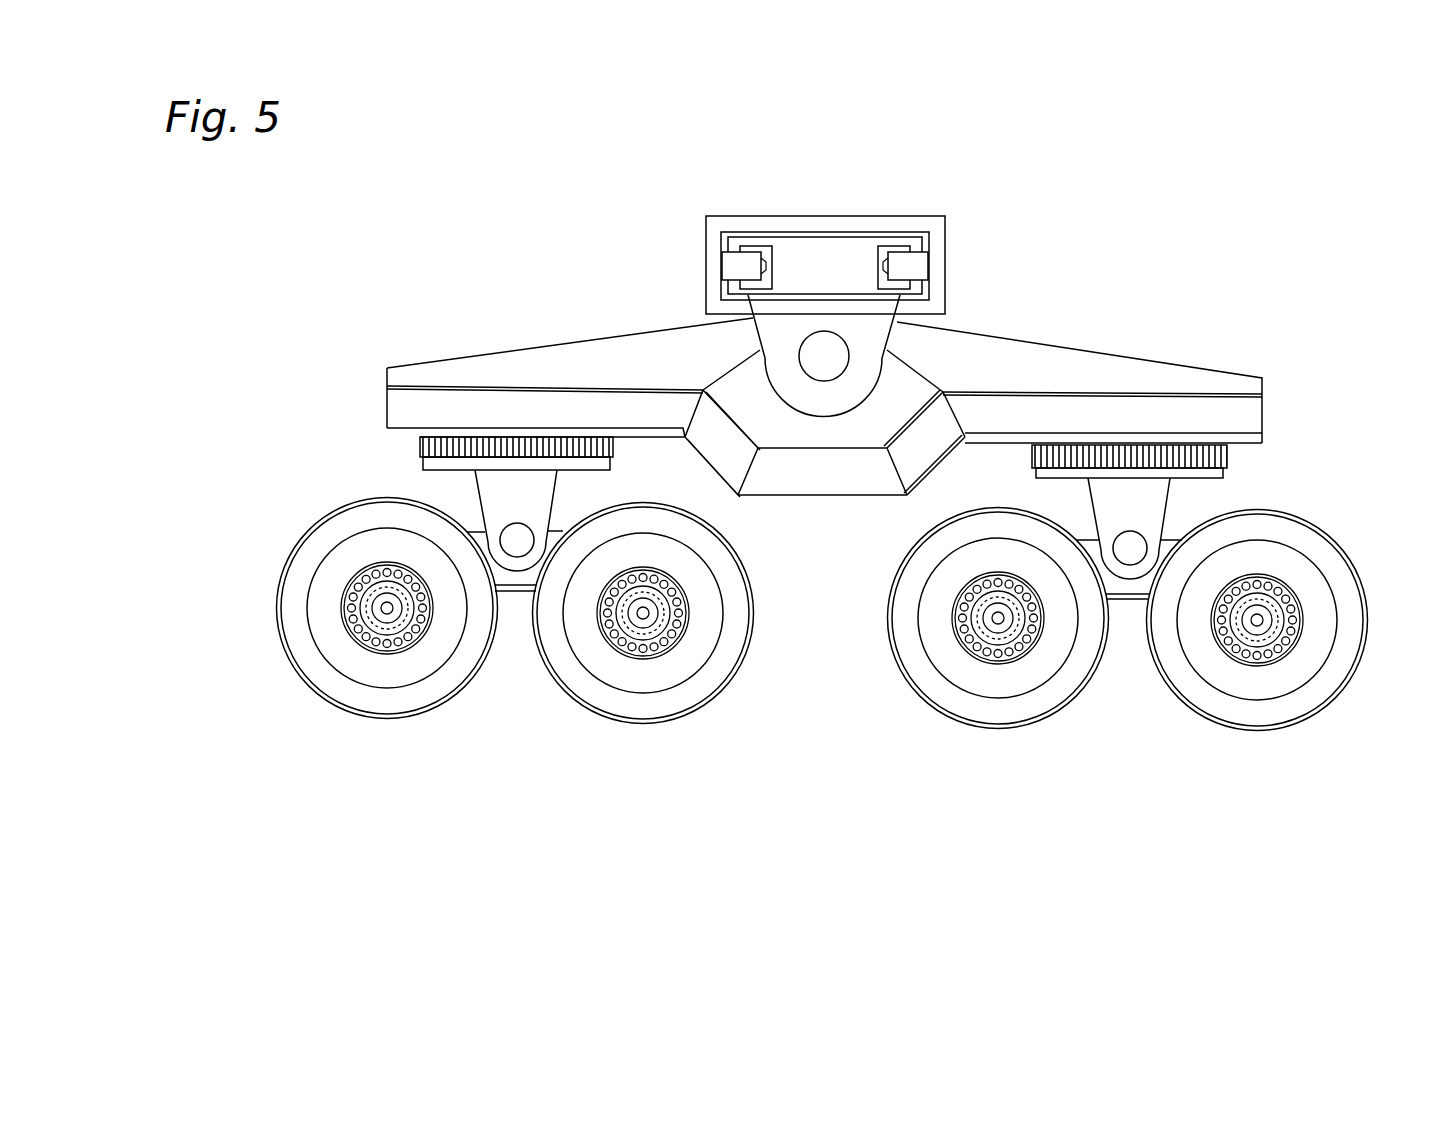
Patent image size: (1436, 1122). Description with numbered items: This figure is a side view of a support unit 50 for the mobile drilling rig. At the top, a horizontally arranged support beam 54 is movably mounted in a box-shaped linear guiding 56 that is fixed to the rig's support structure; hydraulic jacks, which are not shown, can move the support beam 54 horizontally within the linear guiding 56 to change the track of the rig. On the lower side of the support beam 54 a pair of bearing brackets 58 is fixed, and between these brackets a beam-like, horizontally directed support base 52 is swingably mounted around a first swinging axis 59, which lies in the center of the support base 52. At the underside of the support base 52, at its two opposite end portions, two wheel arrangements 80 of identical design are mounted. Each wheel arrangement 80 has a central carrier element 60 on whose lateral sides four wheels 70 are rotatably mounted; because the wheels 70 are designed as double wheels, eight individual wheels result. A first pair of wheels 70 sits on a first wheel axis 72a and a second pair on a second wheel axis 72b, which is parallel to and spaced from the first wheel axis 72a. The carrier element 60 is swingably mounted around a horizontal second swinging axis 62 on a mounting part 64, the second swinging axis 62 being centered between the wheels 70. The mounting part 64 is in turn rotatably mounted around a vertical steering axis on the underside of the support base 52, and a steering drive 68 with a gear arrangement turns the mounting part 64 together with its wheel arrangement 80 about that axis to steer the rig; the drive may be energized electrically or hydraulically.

The support unit 50 is at (1236, 190).
The support base 52 is at (393, 390).
The support beam 54 is at (860, 278).
The linear guiding 56 is at (817, 222).
The bearing brackets 58 is at (770, 317).
The first swinging axis 59 is at (837, 357).
The carrier element 60 is at (515, 578).
The second swinging axis 62 is at (518, 542).
The mounting part 64 is at (487, 495).
The steering drive 68 is at (420, 450).
The wheels 70 is at (317, 673).
The first wheel axis 72a is at (390, 607).
The second wheel axis 72b is at (643, 613).
The wheel arrangements 80 is at (440, 655).